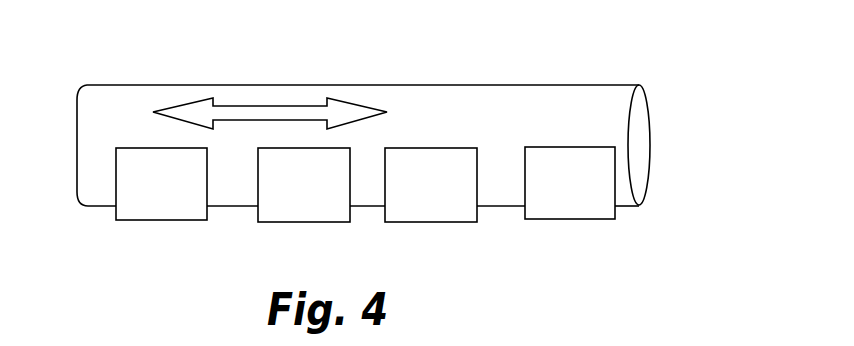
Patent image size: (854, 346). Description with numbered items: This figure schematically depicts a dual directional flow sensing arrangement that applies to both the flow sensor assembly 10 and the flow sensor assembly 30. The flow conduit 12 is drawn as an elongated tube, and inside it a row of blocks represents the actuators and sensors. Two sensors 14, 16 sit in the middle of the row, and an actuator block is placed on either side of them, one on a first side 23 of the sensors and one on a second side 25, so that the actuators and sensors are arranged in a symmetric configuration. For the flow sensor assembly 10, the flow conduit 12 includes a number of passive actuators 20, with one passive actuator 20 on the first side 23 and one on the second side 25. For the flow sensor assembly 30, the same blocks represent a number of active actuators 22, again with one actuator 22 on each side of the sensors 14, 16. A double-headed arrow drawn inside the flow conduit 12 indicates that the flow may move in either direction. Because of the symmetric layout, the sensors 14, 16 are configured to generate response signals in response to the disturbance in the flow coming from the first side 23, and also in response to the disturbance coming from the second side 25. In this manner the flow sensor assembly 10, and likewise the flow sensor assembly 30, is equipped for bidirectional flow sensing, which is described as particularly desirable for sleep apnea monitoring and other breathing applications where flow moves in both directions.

The flow sensor assembly 10 is at (120, 69).
The flow sensor assembly 30 is at (281, 113).
The flow conduit 12 is at (624, 85).
The sensor 14 is at (330, 222).
The sensor 16 is at (456, 222).
The passive actuator 20 is at (138, 221).
The active actuator 22 is at (596, 220).
The first side 23 is at (222, 78).
The second side 25 is at (522, 78).